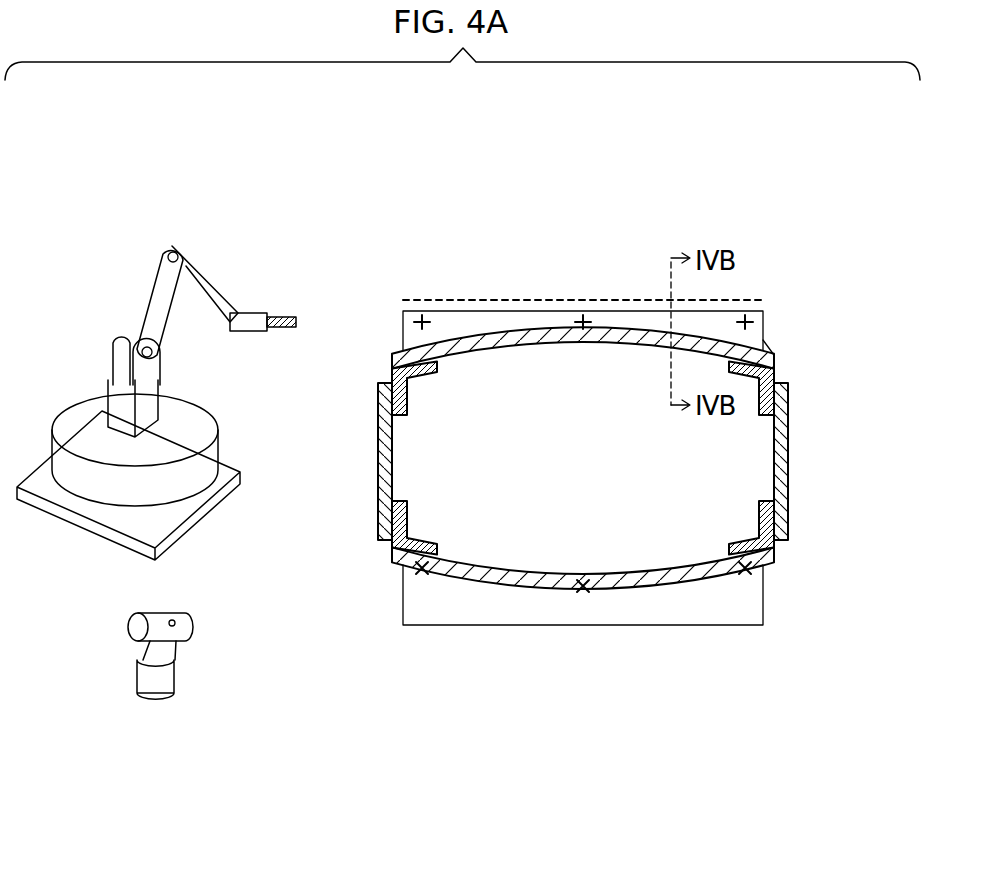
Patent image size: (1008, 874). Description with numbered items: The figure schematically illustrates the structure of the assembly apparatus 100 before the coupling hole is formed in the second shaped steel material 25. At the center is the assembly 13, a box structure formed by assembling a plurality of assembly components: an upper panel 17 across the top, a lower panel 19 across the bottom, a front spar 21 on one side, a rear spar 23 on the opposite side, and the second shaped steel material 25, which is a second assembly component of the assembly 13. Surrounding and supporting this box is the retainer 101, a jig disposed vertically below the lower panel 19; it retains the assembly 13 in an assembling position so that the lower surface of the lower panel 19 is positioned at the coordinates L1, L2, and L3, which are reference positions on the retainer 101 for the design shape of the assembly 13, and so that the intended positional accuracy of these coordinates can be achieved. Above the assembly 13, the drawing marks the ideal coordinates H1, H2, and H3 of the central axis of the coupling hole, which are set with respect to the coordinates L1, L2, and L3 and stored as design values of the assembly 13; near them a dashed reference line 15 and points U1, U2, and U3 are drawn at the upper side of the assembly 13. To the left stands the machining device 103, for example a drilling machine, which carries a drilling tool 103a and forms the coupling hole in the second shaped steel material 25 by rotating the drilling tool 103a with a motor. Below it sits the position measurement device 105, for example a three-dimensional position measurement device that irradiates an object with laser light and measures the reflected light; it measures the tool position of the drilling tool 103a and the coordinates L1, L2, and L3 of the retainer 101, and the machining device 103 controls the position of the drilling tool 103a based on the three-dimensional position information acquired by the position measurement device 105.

The assembly apparatus 100 is at (766, 147).
The assembly 13 is at (385, 290).
The reference plane (dashed line) 15 is at (765, 304).
The upper panel 17 is at (428, 352).
The lower panel 19 is at (645, 586).
The front spar 21 is at (378, 460).
The rear spar 23 is at (790, 468).
The second shaped steel material 25 is at (766, 330).
The retainer 101 is at (763, 604).
The machining device 103 is at (161, 393).
The drilling tool 103a is at (281, 314).
The position measurement device 105 is at (178, 677).
The upper measurement point 1 U1 is at (422, 298).
The upper measurement point 2 U2 is at (583, 298).
The upper measurement point 3 U3 is at (745, 298).
The ideal coordinate H1 is at (428, 322).
The ideal coordinate H2 is at (590, 322).
The ideal coordinate H3 is at (750, 322).
The coordinate L1 is at (421, 572).
The coordinate L2 is at (583, 588).
The coordinate L3 is at (745, 572).